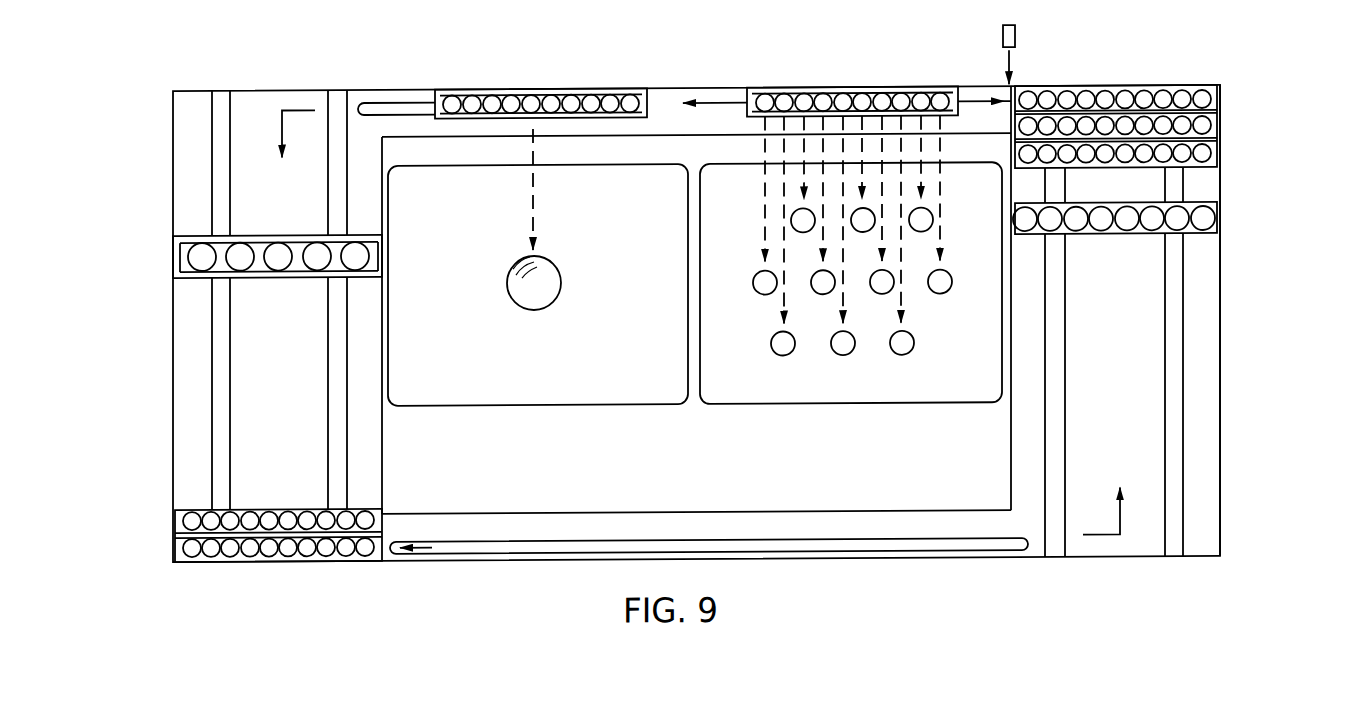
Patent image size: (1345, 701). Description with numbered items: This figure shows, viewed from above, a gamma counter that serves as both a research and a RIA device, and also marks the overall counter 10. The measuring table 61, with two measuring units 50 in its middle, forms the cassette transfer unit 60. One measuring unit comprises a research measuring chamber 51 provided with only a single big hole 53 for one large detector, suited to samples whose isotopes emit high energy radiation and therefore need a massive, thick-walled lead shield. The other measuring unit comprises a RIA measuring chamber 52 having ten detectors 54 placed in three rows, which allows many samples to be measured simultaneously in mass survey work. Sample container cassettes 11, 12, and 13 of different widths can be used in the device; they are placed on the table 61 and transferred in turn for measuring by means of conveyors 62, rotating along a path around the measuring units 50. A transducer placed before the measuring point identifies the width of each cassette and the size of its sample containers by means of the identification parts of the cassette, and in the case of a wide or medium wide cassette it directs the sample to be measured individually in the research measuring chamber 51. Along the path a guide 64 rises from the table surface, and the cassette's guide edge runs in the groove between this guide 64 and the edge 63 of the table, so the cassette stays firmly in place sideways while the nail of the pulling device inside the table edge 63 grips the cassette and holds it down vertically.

The roller conveyor feed device 10 is at (560, 75).
The sample container cassette 11 is at (618, 87).
The sample container cassette 12 is at (1217, 233).
The sample container cassette 13 is at (172, 276).
The measuring unit 50 is at (695, 299).
The research measuring chamber 51 is at (541, 391).
The RIA measuring chamber 52 is at (857, 387).
The hole for the detector 53 is at (556, 291).
The detectors 54 is at (913, 343).
The cassette transfer unit 60 is at (1072, 573).
The measuring table 61 is at (1207, 445).
The conveyors 62 is at (215, 398).
The edge of the table 63 is at (403, 88).
The guide 64 is at (370, 101).